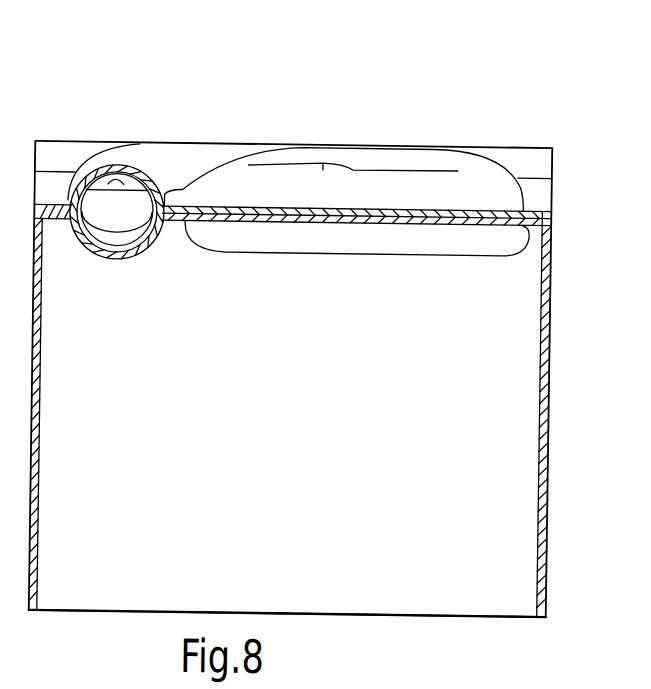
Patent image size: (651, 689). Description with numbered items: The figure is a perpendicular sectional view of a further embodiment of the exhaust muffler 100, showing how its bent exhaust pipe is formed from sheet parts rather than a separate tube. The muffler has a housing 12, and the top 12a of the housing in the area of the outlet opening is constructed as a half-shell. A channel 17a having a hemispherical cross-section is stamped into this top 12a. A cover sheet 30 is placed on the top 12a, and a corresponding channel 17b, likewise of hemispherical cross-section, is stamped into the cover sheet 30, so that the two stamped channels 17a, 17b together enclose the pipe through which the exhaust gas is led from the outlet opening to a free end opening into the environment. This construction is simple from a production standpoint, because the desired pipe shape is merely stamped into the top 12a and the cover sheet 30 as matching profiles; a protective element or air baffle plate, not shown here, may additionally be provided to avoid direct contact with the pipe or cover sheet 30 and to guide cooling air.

The exhaust muffler 100 is at (374, 103).
The housing 12 is at (319, 431).
The housing top 12a is at (525, 224).
The channel with hemispherical cross-section 17a is at (116, 244).
The corresponding channel 17b is at (115, 180).
The cover sheet 30 is at (49, 186).